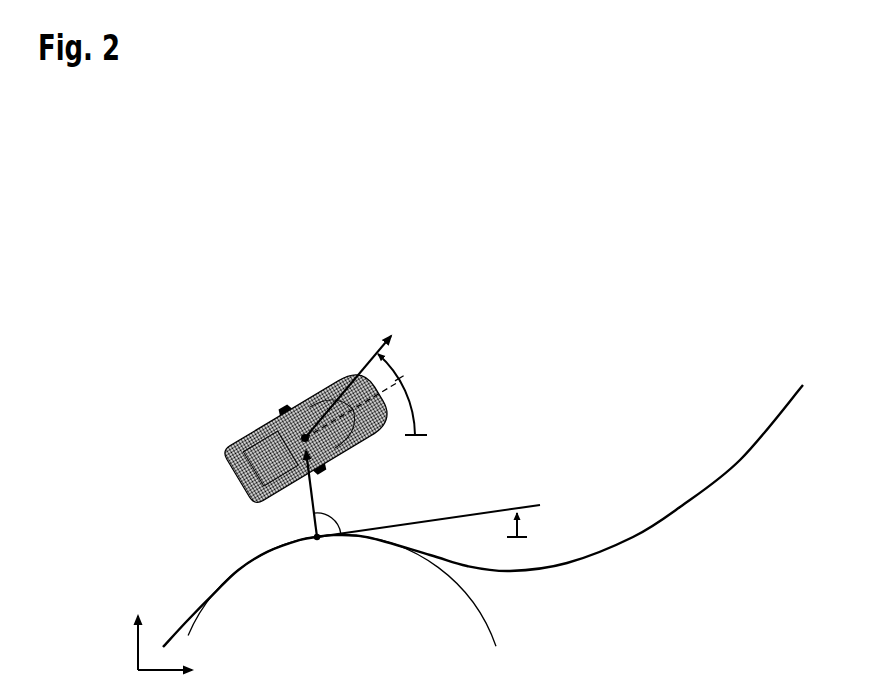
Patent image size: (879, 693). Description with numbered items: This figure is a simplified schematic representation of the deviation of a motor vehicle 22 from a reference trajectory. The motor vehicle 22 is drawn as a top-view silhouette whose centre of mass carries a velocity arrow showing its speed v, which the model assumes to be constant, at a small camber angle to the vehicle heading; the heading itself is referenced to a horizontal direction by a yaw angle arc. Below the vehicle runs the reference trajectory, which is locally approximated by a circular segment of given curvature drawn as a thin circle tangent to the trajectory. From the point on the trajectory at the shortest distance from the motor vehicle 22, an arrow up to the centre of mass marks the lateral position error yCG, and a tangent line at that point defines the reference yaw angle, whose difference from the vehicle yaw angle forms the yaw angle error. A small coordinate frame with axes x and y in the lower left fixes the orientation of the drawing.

The vehicle 22 is at (266, 420).
The lateral position error yCG is at (290, 494).
The speed of the motor vehicle v is at (346, 380).
The x axis x is at (177, 670).
The y axis y is at (134, 625).